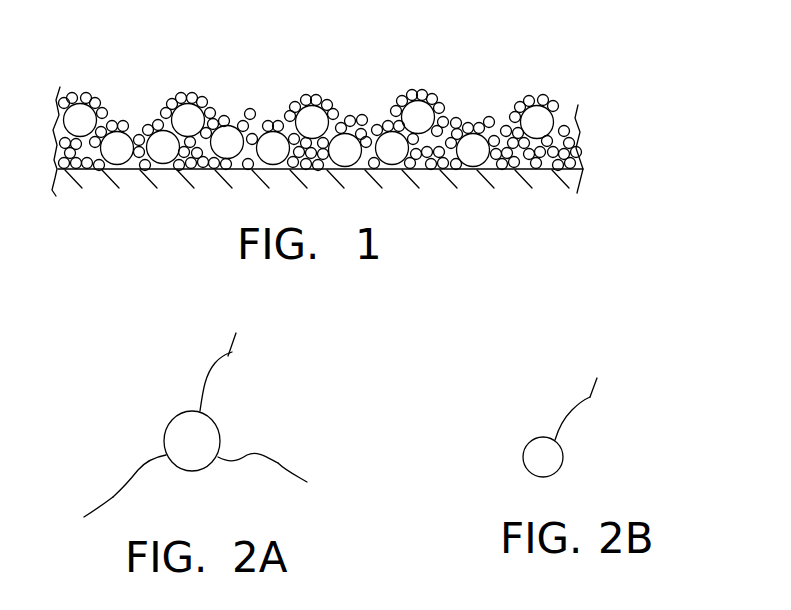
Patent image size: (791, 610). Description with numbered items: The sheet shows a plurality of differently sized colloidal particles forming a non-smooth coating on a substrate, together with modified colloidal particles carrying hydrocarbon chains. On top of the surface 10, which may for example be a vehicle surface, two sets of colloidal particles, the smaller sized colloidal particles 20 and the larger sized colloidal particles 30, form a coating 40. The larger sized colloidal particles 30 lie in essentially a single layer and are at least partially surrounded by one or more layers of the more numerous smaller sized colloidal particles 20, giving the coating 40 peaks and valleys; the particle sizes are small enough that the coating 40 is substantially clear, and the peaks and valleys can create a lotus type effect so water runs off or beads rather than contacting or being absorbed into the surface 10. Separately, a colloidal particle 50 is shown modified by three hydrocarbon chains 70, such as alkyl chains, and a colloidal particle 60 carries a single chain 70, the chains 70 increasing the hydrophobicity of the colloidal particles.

In FIG. 1, the surface 10 is at (507, 170).
In FIG. 1, the smaller sized colloidal particles 20 is at (121, 120).
In FIG. 1, the larger sized colloidal particles 30 is at (116, 153).
In FIG. 1, the coating 40 is at (377, 102).
In FIG. 2A, the colloidal particle 50 is at (183, 430).
In FIG. 2B, the colloidal particle 60 is at (543, 457).
In FIG. 2A, the hydrocarbon chains 70 is at (230, 356).
In FIG. 2B, the hydrocarbon chains 70 is at (590, 397).